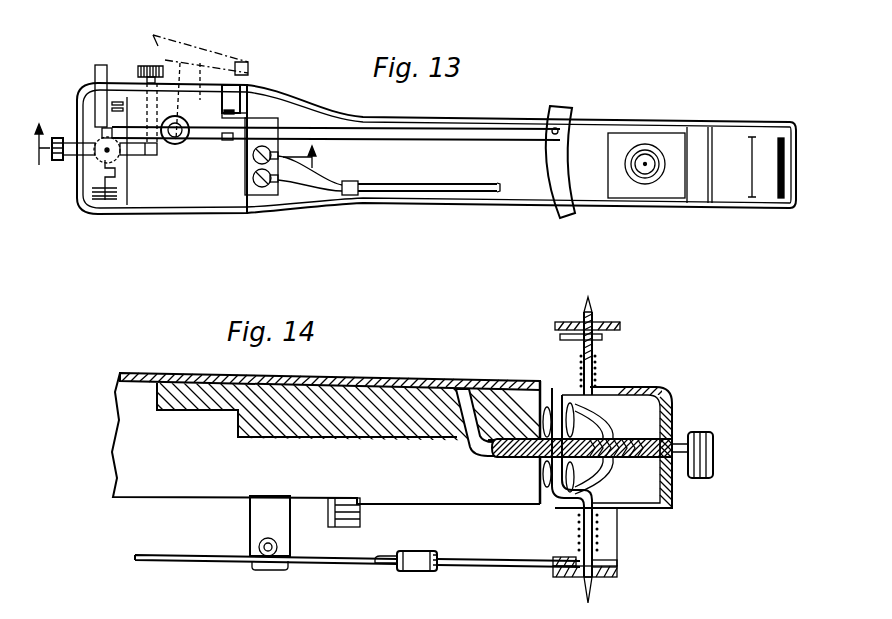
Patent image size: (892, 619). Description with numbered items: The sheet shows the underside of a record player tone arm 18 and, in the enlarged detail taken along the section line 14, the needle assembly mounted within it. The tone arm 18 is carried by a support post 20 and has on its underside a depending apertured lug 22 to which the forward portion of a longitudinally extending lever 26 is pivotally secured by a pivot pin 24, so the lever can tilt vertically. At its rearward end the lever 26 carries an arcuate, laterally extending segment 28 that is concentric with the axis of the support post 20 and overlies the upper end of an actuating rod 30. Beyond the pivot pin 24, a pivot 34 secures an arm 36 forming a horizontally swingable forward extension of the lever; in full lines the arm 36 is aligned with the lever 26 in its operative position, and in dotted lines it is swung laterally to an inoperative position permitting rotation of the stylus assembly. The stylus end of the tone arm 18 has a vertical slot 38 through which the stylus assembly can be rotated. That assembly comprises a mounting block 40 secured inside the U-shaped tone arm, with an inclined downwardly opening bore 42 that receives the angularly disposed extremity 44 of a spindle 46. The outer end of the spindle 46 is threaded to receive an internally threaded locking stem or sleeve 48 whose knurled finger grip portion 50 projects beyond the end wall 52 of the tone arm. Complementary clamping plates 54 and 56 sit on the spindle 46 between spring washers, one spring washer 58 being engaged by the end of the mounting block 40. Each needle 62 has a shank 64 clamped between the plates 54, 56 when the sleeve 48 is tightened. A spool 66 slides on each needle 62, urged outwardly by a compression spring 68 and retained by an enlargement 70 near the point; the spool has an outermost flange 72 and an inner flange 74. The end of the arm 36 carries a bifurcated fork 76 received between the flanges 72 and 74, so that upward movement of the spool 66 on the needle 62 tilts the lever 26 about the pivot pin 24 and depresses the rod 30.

In FIG. 13, the section line 14 is at (188, 157).
In FIG. 13, the tone arm 18 is at (607, 208).
In FIG. 14, the tone arm 18 is at (133, 373).
In FIG. 13, the support post 20 is at (645, 157).
In FIG. 13, the depending apertured lug 22 is at (248, 95).
In FIG. 14, the depending apertured lug 22 is at (265, 508).
In FIG. 13, the pivot pin 24 is at (235, 130).
In FIG. 14, the pivot pin 24 is at (285, 545).
In FIG. 13, the lever 26 is at (302, 127).
In FIG. 14, the lever 26 is at (220, 548).
In FIG. 13, the segment 28 is at (545, 160).
In FIG. 13, the actuating rod 30 is at (553, 125).
In FIG. 14, the actuating rod 30 is at (557, 430).
In FIG. 13, the pivot 34 is at (177, 144).
In FIG. 14, the pivot 34 is at (405, 550).
In FIG. 13, the arm 36 is at (140, 105).
In FIG. 14, the arm 36 is at (468, 570).
In FIG. 13, the slot 38 is at (127, 196).
In FIG. 14, the slot 38 is at (540, 383).
In FIG. 14, the mounting block 40 is at (365, 385).
In FIG. 14, the bore 42 is at (460, 417).
In FIG. 14, the angularly disposed extremity 44 is at (473, 415).
In FIG. 14, the spindle 46 is at (500, 447).
In FIG. 14, the locking stem or sleeve 48 is at (682, 437).
In FIG. 13, the knurled finger grip portion 50 is at (62, 137).
In FIG. 14, the knurled finger grip portion 50 is at (715, 453).
In FIG. 13, the end wall 52 is at (77, 178).
In FIG. 14, the end wall 52 is at (672, 400).
In FIG. 14, the clamping plate 54 is at (545, 488).
In FIG. 14, the clamping plate 56 is at (565, 483).
In FIG. 14, the spring washer or flange 58 is at (540, 460).
In FIG. 14, the stylus or needle 62 is at (597, 370).
In FIG. 14, the shank 64 is at (575, 425).
In FIG. 14, the spool 66 is at (602, 350).
In FIG. 14, the compression spring 68 is at (578, 370).
In FIG. 14, the enlargement 70 is at (597, 320).
In FIG. 14, the outermost flange 72 is at (622, 322).
In FIG. 14, the inner flange 74 is at (562, 337).
In FIG. 13, the bifurcated fork 76 is at (181, 37).
In FIG. 14, the bifurcated fork 76 is at (615, 568).